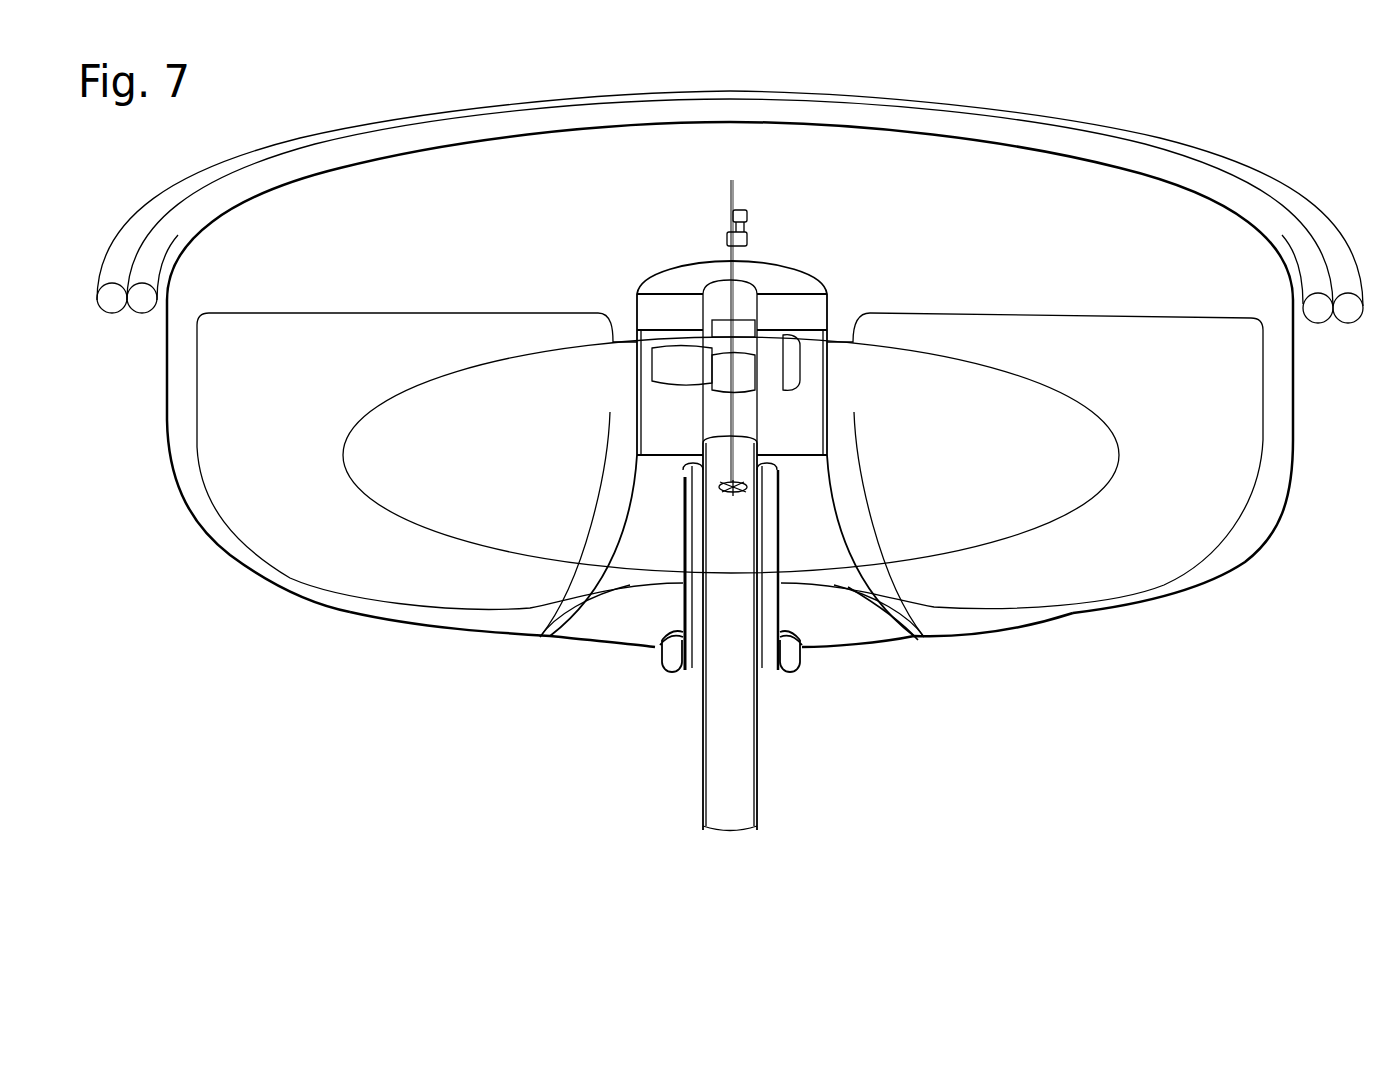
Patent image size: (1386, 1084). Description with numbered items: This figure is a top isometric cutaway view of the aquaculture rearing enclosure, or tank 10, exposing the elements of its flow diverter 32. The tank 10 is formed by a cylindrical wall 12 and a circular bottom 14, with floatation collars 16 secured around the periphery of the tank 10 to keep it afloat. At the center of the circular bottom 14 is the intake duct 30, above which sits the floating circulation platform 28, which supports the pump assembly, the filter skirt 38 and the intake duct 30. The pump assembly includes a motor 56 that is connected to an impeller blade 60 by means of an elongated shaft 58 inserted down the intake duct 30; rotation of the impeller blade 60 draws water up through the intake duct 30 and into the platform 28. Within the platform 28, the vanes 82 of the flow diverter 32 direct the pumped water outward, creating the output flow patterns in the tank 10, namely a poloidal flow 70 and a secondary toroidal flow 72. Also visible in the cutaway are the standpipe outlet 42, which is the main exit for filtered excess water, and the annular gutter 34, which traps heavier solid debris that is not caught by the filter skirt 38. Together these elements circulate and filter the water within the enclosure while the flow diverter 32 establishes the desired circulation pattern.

The aquaculture rearing enclosure 10 is at (772, 428).
The cylindrical wall 12 is at (1299, 489).
The circular bottom 14 is at (350, 616).
The floatation collars 16 is at (1350, 334).
The floating circulation platform 28 is at (743, 331).
The intake duct 30 is at (701, 762).
The flow diverter 32 is at (852, 365).
The annular gutter 34 is at (793, 688).
The filter skirt 38 is at (924, 624).
The standpipe outlet 42 is at (681, 607).
The motor 56 is at (761, 219).
The elongated shaft 58 is at (742, 430).
The impeller blade 60 is at (721, 496).
The poloidal flow 70 is at (342, 302).
The secondary toroidal flow 72 is at (1122, 428).
The vanes 82 is at (668, 365).